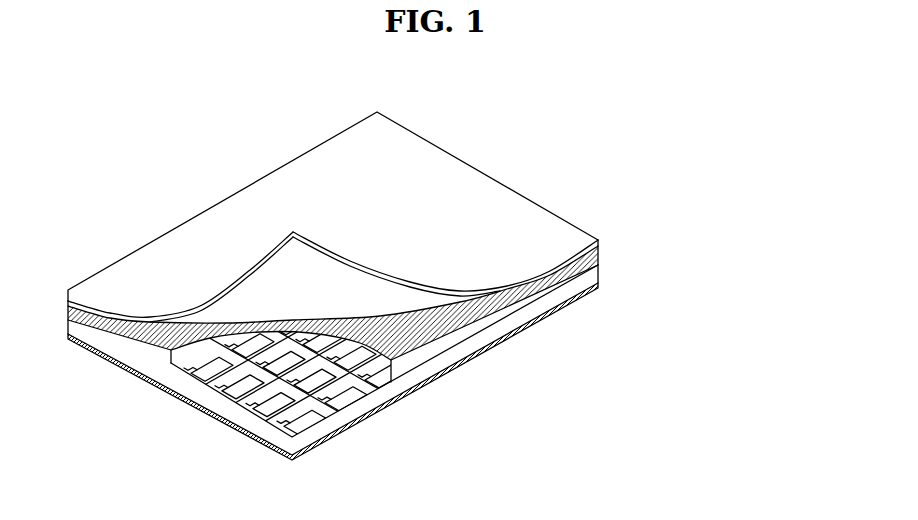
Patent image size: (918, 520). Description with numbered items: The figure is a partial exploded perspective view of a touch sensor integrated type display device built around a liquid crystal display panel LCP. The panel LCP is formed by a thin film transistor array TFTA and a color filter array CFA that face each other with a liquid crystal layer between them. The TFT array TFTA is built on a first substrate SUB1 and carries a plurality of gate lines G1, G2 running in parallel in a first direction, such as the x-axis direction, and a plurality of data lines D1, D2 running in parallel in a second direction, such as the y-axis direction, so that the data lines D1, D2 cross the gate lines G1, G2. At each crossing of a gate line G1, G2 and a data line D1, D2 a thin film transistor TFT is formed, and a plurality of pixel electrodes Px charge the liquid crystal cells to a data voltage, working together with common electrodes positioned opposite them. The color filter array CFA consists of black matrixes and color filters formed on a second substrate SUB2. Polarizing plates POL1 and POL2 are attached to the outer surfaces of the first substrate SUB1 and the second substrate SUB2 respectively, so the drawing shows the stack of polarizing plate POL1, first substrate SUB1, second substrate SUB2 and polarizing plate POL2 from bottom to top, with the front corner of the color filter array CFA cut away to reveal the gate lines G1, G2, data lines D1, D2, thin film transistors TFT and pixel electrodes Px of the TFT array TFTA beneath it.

The polarizing plate POL2 is at (600, 240).
The second substrate SUB2 is at (600, 252).
The first substrate SUB1 is at (600, 271).
The polarizing plate POL1 is at (600, 288).
The color filter array CFA is at (403, 247).
The thin film transistor array TFTA is at (407, 362).
The liquid crystal display panel LCP is at (433, 286).
The thin film transistor TFT is at (277, 372).
The data line D1 is at (336, 380).
The data line D2 is at (305, 363).
The gate line G1 is at (264, 369).
The gate line G2 is at (304, 346).
The pixel electrode Px is at (299, 373).